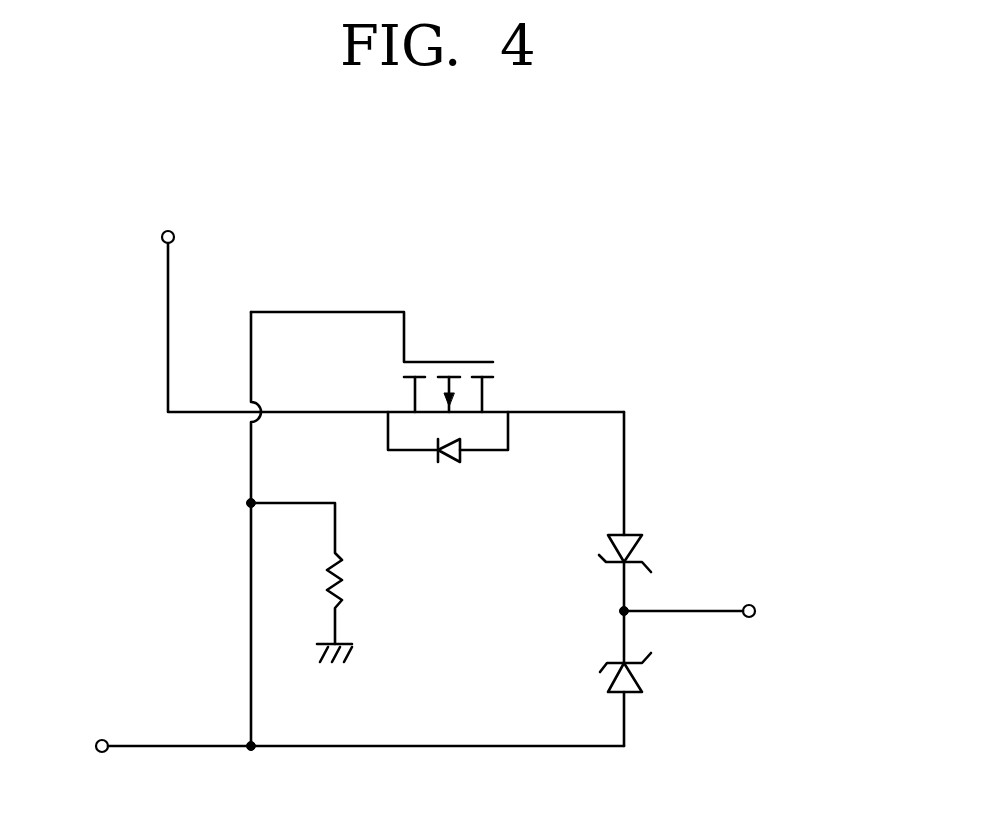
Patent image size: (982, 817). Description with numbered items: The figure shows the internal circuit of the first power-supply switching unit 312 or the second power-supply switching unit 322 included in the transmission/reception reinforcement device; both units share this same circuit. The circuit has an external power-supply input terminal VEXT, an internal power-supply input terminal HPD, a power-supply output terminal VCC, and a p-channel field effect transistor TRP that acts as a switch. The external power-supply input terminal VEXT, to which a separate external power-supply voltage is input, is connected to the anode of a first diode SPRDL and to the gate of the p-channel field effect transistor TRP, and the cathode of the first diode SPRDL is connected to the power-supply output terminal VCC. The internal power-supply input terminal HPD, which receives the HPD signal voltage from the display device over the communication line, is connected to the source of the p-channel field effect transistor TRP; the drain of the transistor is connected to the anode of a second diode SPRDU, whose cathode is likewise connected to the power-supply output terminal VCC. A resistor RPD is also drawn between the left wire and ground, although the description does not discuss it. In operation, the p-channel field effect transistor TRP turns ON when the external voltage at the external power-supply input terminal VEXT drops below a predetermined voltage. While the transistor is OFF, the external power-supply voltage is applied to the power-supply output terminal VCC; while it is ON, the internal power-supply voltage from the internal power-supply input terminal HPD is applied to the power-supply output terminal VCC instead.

The first power-supply switching unit 312 is at (623, 250).
The second power-supply switching unit 322 is at (422, 476).
The internal power-supply input terminal HPD is at (164, 219).
The p-channel field effect transistor TRP is at (408, 387).
The second diode SPRDU is at (669, 552).
The first diode SPRDL is at (668, 674).
The power-supply output terminal VCC is at (715, 611).
The external power-supply input terminal VEXT is at (73, 741).
The pull-down resistor RPD is at (325, 582).